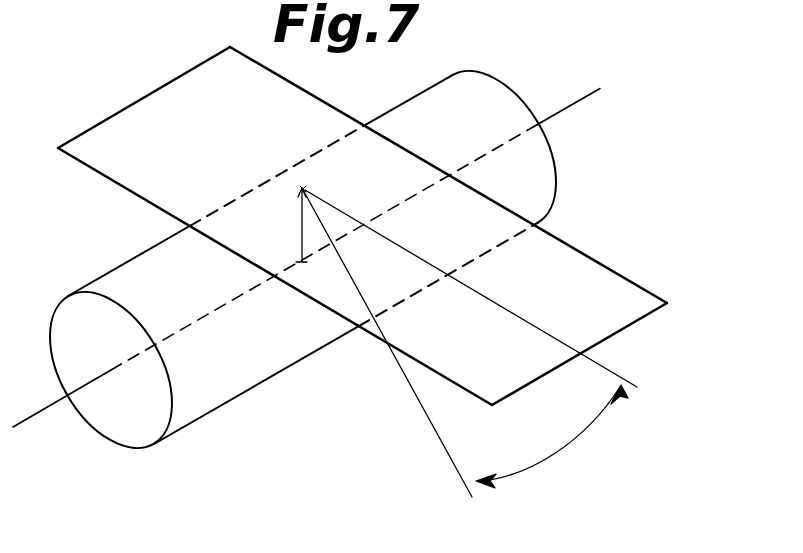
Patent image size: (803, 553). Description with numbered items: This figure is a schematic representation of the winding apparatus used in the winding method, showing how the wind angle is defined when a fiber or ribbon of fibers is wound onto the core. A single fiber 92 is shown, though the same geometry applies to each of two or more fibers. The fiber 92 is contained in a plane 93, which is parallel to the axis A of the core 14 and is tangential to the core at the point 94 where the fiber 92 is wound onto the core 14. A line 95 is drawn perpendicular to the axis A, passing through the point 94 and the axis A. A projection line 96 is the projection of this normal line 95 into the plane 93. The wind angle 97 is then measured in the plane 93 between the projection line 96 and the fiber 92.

The core 14 is at (540, 169).
The fiber 92 is at (421, 404).
The plane 93 is at (563, 260).
The point 94 is at (319, 193).
The line 95 is at (301, 228).
The projection line 96 is at (605, 368).
The wind angle 97 is at (578, 437).
The axis A is at (43, 412).